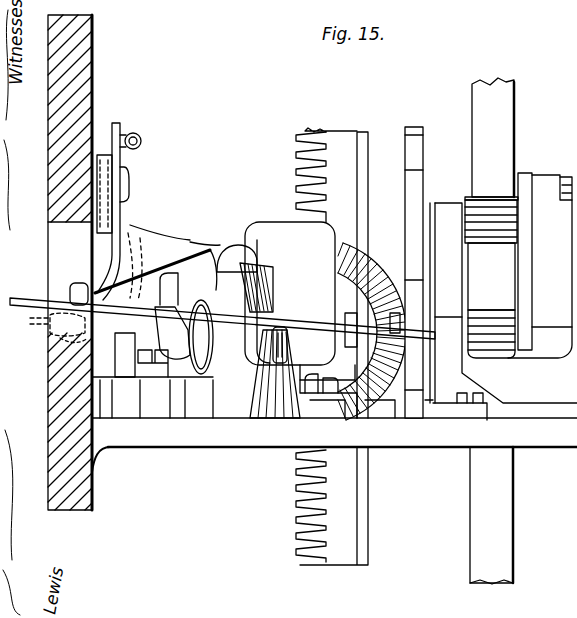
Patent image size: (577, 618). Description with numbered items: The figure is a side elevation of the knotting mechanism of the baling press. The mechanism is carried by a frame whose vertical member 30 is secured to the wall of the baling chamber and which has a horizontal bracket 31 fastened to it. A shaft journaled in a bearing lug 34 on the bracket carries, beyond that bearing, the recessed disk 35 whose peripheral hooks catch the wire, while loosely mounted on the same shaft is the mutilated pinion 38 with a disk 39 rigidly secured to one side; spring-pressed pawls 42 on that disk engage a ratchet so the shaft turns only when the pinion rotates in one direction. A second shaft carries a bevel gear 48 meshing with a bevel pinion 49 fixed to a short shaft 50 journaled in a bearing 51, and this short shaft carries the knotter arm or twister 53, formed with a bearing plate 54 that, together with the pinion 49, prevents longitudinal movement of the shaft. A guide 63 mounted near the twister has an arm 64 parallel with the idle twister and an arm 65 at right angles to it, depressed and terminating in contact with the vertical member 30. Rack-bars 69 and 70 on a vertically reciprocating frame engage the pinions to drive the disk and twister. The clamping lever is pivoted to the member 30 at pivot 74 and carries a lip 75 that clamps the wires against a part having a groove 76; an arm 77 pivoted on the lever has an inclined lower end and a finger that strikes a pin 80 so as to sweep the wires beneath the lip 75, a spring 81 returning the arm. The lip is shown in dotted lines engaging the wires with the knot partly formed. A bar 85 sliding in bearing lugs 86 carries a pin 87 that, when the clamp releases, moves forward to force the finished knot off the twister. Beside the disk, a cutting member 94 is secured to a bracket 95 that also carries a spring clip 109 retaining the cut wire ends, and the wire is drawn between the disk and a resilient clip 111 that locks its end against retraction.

The vertical member 30 is at (93, 52).
The horizontal bracket 31 is at (266, 440).
The bearing lug 34 is at (450, 201).
The disk 35 is at (428, 136).
The mutilated pinion 38 is at (492, 200).
The disk 39 is at (528, 174).
The spring-pressed pawl 42 is at (554, 180).
The bevel gear 48 is at (366, 262).
The bevel pinion 49 is at (256, 365).
The short shaft 50 is at (289, 346).
The bearing 51 is at (286, 236).
The knotter arm 53 is at (178, 276).
The bearing plate 54 is at (195, 346).
The guide 63 is at (168, 278).
The arm 64 is at (246, 258).
The arm 65 is at (84, 283).
The rack-bar 69 is at (510, 100).
The rack-bar 70 is at (350, 134).
The pivot 74 is at (130, 183).
The lip 75 is at (72, 294).
The groove 76 is at (55, 335).
The arm 77 is at (122, 228).
The pin 80 is at (100, 156).
The spring 81 is at (140, 137).
The bar 85 is at (142, 400).
The bearing lug 86 is at (96, 402).
The pin 87 is at (76, 340).
The cutting member 94 is at (380, 410).
The bracket 95 is at (338, 410).
The spring clip 109 is at (365, 310).
The resilient clip 111 is at (432, 395).